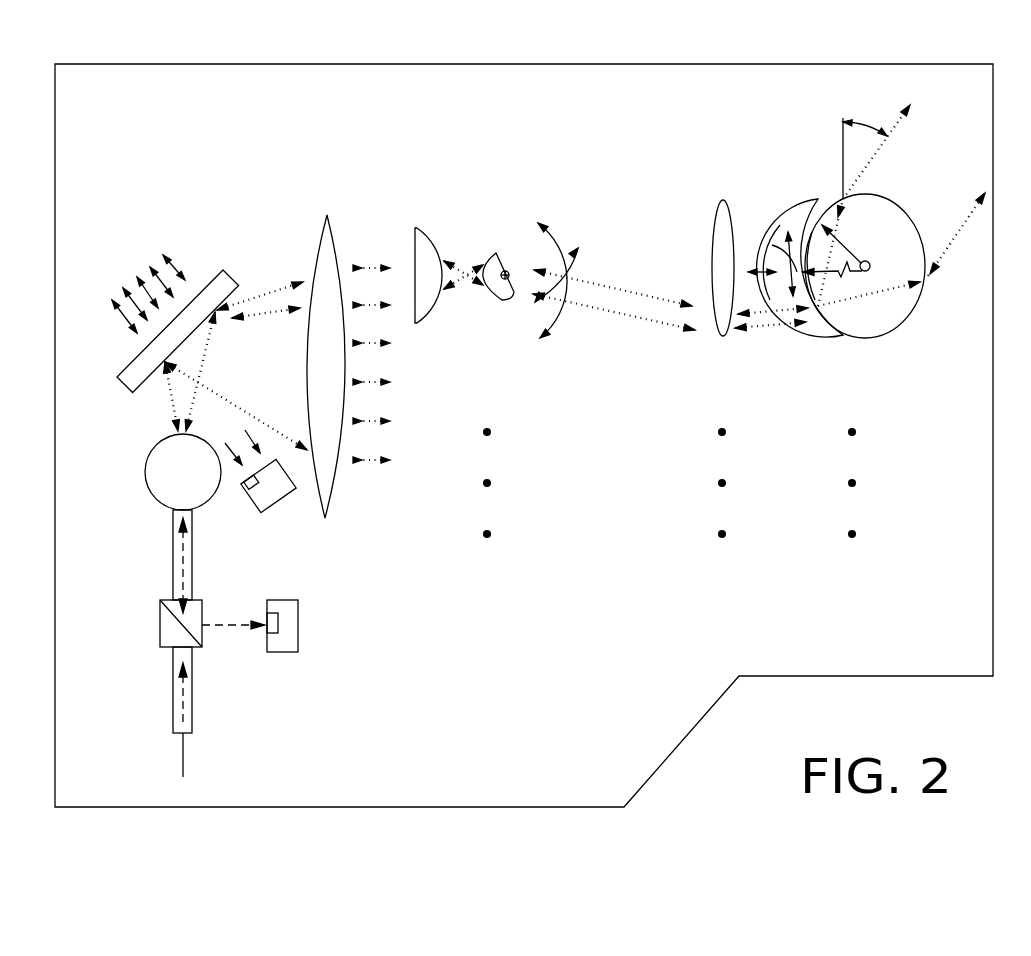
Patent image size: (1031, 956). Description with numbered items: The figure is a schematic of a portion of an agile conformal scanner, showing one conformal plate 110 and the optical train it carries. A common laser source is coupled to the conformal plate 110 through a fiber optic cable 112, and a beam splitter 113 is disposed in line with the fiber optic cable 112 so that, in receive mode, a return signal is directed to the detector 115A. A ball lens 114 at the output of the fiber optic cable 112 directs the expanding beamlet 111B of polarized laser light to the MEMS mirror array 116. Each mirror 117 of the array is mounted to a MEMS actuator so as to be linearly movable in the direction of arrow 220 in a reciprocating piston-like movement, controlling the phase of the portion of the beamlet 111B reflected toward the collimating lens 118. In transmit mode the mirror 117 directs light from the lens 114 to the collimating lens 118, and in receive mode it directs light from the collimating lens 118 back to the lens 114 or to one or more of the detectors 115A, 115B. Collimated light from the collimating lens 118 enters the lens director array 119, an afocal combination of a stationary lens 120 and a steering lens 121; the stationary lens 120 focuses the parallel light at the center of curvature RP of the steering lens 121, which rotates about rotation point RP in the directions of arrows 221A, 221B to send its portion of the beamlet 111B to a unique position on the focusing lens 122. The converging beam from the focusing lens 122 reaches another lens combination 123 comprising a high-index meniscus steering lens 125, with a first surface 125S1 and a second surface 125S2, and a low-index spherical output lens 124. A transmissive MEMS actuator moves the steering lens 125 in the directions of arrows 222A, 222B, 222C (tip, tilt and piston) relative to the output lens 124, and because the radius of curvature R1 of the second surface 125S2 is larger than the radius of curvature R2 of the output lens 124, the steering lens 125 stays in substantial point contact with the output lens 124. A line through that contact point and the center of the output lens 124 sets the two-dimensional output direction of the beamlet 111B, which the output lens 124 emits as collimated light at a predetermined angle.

The conformal plate 110 is at (684, 770).
The beamlet 111B is at (185, 760).
The fiber optic cable 112 is at (173, 551).
The beam splitter 113 is at (160, 633).
The ball lens 114 is at (155, 500).
The detector 115A is at (298, 622).
The detector 115B is at (280, 500).
The MEMS mirror array 116 is at (133, 422).
The mirror 117 is at (232, 270).
The collimating lens 118 is at (327, 215).
The lens director array 119 is at (464, 197).
The stationary lens 120 is at (432, 314).
The steering lens 121 is at (496, 304).
The center of curvature RP is at (506, 268).
The focusing lens 122 is at (723, 200).
The lens combination 123 is at (824, 170).
The output lens 124 is at (893, 333).
The steering lens 125 is at (822, 336).
The first surface 125S1 is at (795, 208).
The second surface 125S2 is at (845, 205).
The arrow 220 is at (176, 263).
The arrow 221A is at (557, 238).
The arrow 221B is at (577, 268).
The arrow 222A is at (778, 250).
The arrow 222B is at (789, 236).
The arrow 222C is at (757, 274).
The radius of curvature R1 is at (838, 272).
The radius of curvature R2 is at (843, 245).